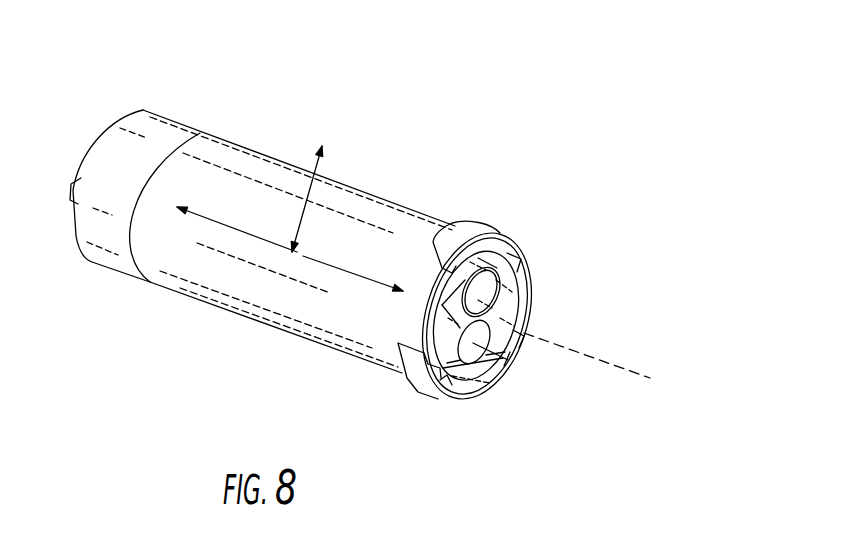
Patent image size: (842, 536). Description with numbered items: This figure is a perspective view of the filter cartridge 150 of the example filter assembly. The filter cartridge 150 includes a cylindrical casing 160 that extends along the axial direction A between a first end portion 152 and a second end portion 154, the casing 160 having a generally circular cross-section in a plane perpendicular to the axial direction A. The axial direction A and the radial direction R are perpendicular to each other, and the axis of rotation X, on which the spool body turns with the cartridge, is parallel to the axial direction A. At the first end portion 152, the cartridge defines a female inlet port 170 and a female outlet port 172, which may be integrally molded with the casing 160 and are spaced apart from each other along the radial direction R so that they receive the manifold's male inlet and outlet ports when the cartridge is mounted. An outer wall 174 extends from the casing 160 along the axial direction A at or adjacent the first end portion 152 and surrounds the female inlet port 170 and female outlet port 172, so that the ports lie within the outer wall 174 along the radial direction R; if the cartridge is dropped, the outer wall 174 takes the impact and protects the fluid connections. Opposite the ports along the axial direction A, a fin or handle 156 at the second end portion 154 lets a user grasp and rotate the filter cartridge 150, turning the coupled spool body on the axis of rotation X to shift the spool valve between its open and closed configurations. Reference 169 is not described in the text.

The filter cartridge 150 is at (421, 52).
The first end portion 152 is at (425, 403).
The second end portion 154 is at (81, 273).
The handle 156 is at (73, 181).
The casing 160 is at (243, 306).
The support 169 is at (496, 357).
The female inlet port 170 is at (475, 347).
The female outlet port 172 is at (487, 297).
The outer wall 174 is at (483, 223).
The radial direction R is at (307, 197).
The axial direction A is at (331, 265).
The axis of rotation X is at (608, 362).